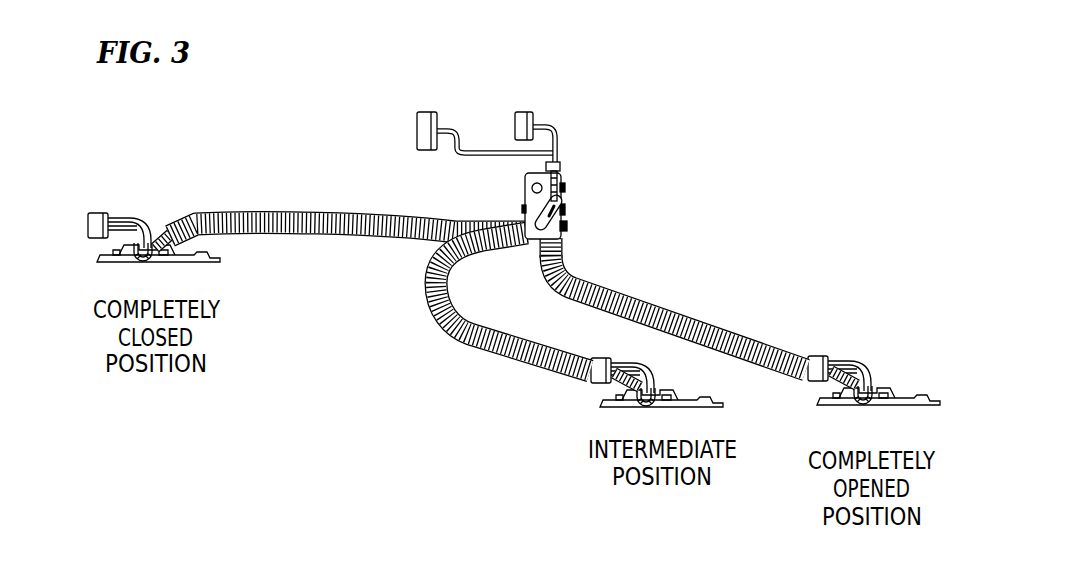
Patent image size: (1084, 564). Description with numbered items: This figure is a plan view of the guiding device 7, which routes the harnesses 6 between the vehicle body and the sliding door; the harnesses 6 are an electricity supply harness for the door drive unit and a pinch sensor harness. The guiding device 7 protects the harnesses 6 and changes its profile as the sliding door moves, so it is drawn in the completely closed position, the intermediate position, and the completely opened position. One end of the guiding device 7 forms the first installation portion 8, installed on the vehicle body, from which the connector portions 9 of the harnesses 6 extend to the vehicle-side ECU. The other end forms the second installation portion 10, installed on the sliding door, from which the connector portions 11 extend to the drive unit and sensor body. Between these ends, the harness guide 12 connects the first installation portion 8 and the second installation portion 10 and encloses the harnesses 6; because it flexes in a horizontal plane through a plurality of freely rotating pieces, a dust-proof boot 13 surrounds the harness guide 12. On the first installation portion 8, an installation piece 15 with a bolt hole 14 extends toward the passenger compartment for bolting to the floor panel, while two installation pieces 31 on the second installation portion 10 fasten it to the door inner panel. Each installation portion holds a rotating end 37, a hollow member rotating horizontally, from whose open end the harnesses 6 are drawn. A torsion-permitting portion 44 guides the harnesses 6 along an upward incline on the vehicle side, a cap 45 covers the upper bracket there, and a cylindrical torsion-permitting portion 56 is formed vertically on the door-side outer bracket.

The harnesses 6 is at (137, 226).
The guiding device 7 is at (488, 263).
The first installation portion 8 is at (565, 168).
The connector portions 9 is at (417, 128).
The second installation portion 10 is at (507, 346).
The connector portions 11 is at (100, 214).
The harness guide 12 is at (323, 238).
The dust-proof boot 13 is at (488, 310).
The bolt hole 14 is at (531, 186).
The installation piece 15 is at (543, 189).
The installation pieces 31 is at (98, 256).
The rotating end 37 is at (157, 235).
The torsion-permitting portion 44 is at (548, 217).
The cap 45 is at (600, 201).
The torsion-permitting portion 56 is at (143, 262).